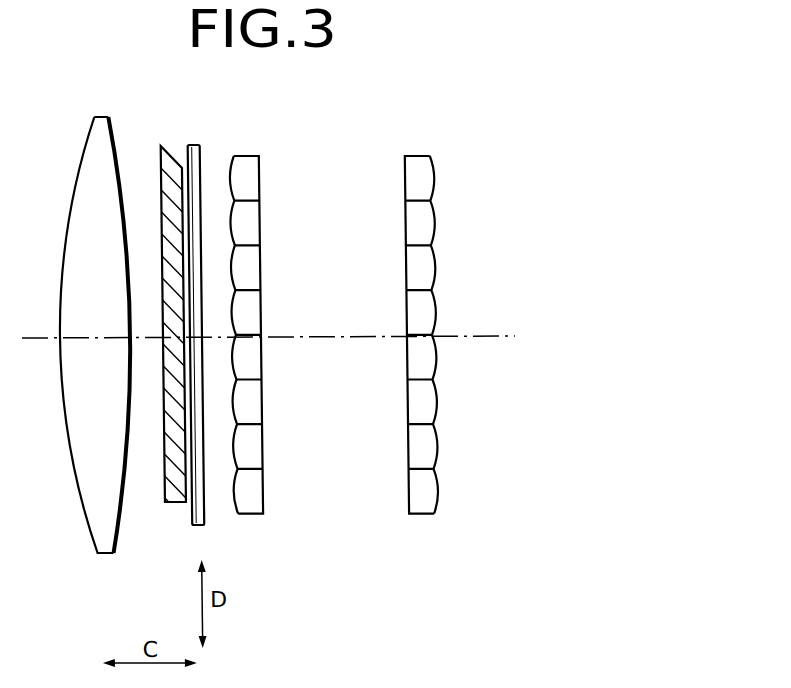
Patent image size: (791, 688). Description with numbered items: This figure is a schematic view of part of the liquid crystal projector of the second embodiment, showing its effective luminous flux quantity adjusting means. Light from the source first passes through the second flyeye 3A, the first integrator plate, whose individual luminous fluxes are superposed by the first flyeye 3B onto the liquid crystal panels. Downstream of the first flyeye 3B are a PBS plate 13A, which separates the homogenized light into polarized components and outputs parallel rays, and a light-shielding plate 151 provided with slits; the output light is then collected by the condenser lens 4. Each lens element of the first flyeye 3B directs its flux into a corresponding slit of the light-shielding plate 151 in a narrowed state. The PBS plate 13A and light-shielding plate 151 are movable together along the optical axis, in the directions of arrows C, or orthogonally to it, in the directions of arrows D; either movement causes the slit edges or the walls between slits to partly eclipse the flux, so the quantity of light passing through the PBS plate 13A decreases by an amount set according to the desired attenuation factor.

The condenser lens 4 is at (98, 117).
The PBS plate 13A is at (165, 146).
The light-shielding plate 151 is at (200, 145).
The first flyeye 3B is at (250, 156).
The second flyeye 3A is at (436, 155).